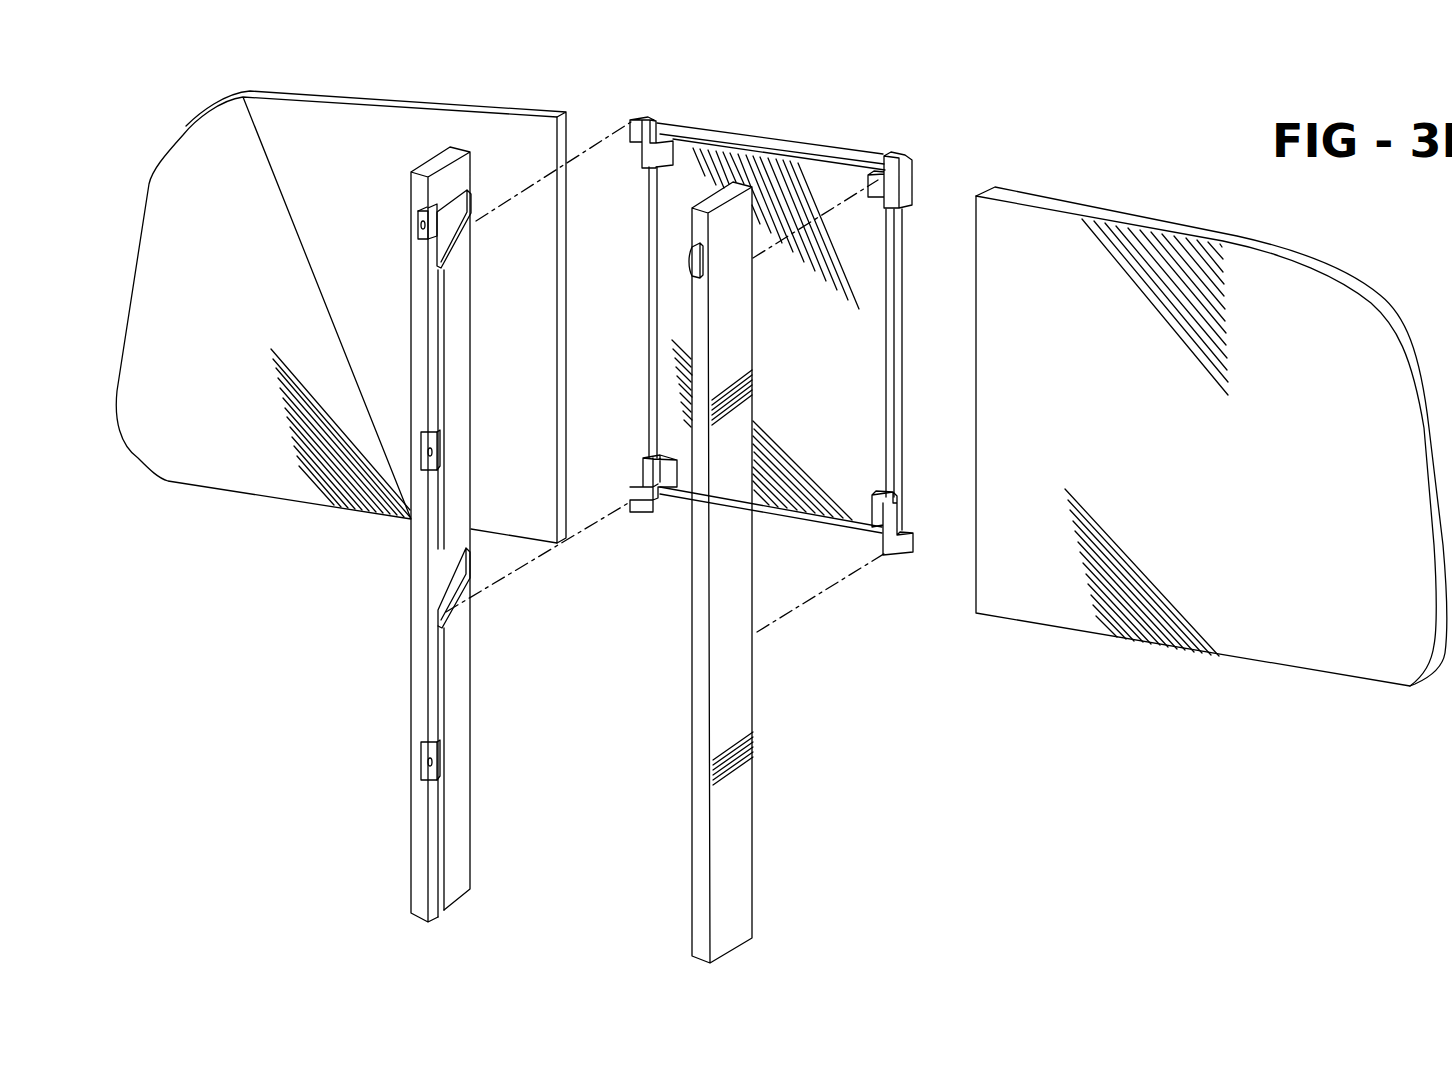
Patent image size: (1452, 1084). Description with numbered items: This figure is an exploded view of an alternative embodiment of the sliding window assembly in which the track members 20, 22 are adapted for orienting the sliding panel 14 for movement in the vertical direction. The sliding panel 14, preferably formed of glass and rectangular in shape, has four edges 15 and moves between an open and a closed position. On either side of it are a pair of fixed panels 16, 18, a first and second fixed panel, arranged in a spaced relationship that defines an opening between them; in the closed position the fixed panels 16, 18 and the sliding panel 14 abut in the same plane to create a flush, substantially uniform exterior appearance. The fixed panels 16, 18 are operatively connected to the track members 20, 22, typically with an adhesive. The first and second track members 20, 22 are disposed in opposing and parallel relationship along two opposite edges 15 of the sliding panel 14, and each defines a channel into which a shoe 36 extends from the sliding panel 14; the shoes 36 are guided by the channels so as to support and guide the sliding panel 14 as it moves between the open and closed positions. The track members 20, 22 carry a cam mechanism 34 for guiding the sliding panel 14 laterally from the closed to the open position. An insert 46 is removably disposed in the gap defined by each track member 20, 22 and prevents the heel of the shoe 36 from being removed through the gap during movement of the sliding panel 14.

The sliding panel 14 is at (760, 194).
The edge 15 is at (725, 135).
The fixed panel 16 is at (1288, 332).
The fixed panel 18 is at (220, 145).
The track member 20 is at (391, 534).
The track member 22 is at (703, 572).
The cam mechanism 34 is at (418, 218).
The shoe 36 is at (632, 122).
The insert 46 is at (425, 765).